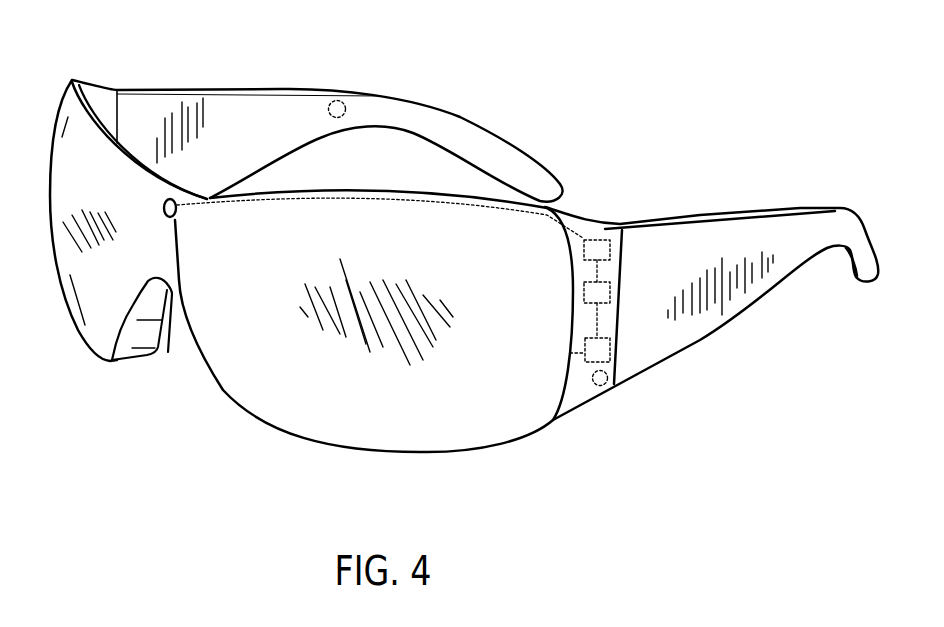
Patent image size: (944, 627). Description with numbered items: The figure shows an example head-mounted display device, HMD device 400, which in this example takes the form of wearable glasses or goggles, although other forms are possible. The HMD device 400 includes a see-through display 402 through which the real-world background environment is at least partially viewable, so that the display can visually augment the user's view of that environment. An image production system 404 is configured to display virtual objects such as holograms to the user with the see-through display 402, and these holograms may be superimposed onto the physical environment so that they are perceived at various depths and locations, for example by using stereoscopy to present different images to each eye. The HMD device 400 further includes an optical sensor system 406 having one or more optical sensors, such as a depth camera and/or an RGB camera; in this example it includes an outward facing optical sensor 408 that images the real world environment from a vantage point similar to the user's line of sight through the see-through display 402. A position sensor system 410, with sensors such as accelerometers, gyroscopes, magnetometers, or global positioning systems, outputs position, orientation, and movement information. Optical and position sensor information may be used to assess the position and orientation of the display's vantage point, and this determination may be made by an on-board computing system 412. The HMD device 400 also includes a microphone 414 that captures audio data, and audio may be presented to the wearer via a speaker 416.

The HMD device 400 is at (531, 63).
The see-through display 402 is at (343, 412).
The image production system 404 is at (598, 351).
The optical sensor system 406 is at (176, 176).
The outward facing optical sensor 408 is at (152, 331).
The position sensor system 410 is at (598, 290).
The on-board computing system 412 is at (603, 250).
The microphone 414 is at (603, 387).
The speaker 416 is at (338, 100).